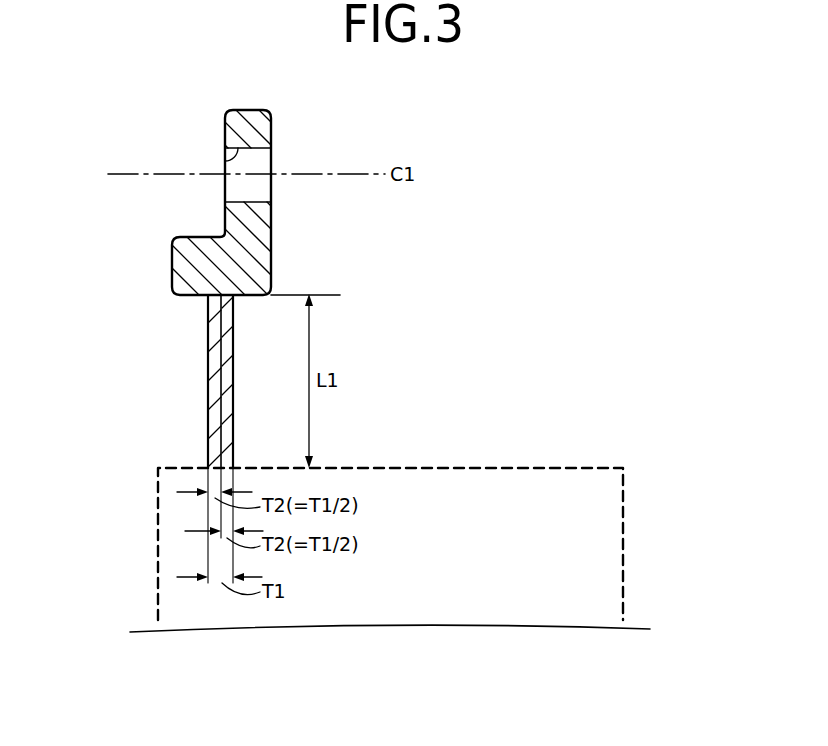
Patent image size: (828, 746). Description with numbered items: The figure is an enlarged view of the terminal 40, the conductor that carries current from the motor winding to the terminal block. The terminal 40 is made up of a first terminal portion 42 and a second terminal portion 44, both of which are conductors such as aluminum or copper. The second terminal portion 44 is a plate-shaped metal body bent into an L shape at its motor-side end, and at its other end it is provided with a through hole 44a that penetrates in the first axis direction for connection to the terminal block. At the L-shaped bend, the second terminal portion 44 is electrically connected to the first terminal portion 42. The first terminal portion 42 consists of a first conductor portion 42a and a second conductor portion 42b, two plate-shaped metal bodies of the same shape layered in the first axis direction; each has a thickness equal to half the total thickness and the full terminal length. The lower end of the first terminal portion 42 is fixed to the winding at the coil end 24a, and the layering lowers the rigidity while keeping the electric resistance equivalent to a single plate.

The coil end 24a is at (600, 559).
The terminal 40 is at (90, 271).
The first terminal portion 42 is at (172, 381).
The first conductor portion 42a is at (213, 353).
The second conductor portion 42b is at (226, 387).
The second terminal portion 44 is at (258, 226).
The through hole 44a is at (224, 156).